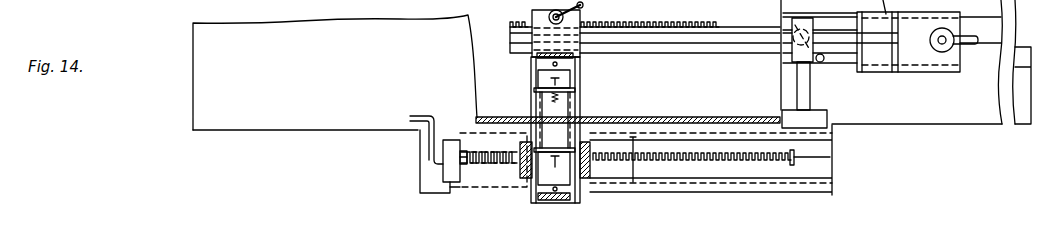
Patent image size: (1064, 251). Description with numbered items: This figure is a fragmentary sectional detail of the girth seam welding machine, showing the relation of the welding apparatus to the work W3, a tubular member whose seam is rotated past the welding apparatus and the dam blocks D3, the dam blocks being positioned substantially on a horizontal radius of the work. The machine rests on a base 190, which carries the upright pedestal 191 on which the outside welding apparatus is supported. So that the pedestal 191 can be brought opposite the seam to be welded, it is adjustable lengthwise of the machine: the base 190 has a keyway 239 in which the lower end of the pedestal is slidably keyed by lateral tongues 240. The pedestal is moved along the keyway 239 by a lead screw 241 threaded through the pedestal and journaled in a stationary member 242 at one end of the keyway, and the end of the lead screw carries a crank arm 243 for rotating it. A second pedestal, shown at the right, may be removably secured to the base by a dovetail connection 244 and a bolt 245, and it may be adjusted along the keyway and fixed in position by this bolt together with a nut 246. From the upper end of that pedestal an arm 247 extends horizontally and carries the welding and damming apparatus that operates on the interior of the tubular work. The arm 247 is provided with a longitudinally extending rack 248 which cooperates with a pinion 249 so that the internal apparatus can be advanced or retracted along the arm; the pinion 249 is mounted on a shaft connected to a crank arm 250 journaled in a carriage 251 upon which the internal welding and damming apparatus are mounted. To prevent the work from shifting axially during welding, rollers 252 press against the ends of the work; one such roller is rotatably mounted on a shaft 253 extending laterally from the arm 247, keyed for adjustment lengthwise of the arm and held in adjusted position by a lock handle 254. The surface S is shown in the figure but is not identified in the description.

The base 190 is at (295, 137).
The pedestal 191 is at (593, 192).
The keyway 239 is at (485, 172).
The lateral tongues 240 is at (817, 178).
The lead screw 241 is at (680, 160).
The stationary member 242 is at (452, 200).
The crank arm 243 is at (427, 142).
The dovetail connection 244 is at (926, 42).
The bolt 245 is at (942, 53).
The nut 246 is at (940, 28).
The arm 247 is at (703, 48).
The rack 248 is at (645, 26).
The pinion 249 is at (550, 13).
The crank arm 250 is at (583, 5).
The carriage 251 is at (580, 67).
The rollers 252 is at (828, 118).
The shaft 253 is at (808, 97).
The lock handle 254 is at (823, 61).
The dam blocks D3 is at (527, 128).
The slide surface S is at (557, 122).
The work W3 is at (732, 101).